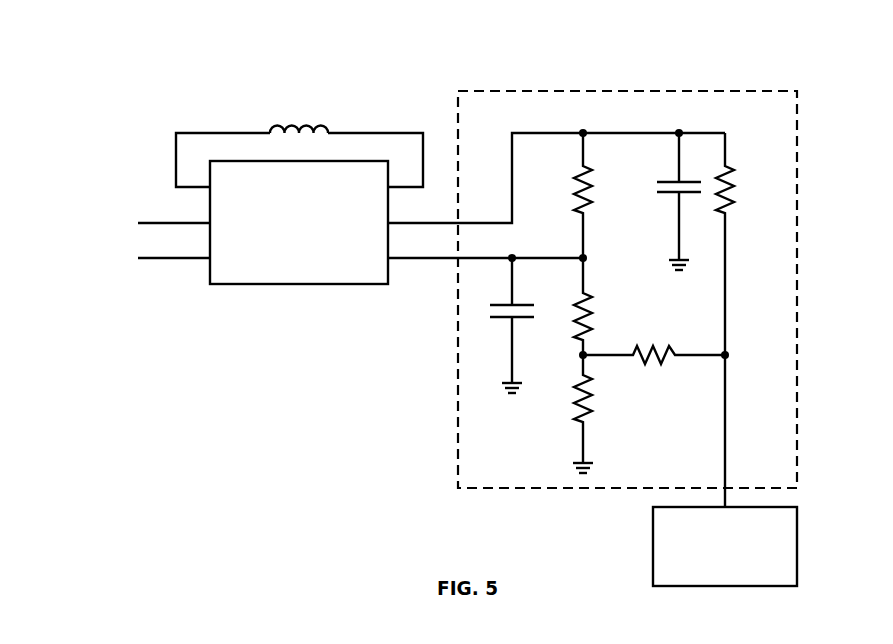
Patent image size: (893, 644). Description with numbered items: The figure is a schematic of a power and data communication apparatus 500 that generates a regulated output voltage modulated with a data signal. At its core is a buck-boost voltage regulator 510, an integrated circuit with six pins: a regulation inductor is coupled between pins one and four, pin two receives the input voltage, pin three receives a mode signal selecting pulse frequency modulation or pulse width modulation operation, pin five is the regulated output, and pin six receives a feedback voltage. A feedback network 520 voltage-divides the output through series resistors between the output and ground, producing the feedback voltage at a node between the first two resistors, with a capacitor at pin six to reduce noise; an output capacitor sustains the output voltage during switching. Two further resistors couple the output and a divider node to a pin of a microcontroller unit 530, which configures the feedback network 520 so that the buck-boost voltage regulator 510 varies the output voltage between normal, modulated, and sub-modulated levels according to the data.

The power and data communication apparatus 500 is at (561, 50).
The buck-boost voltage regulator 510 is at (283, 276).
The feedback network 520 is at (743, 124).
The microcontroller unit (MCU) 530 is at (708, 571).